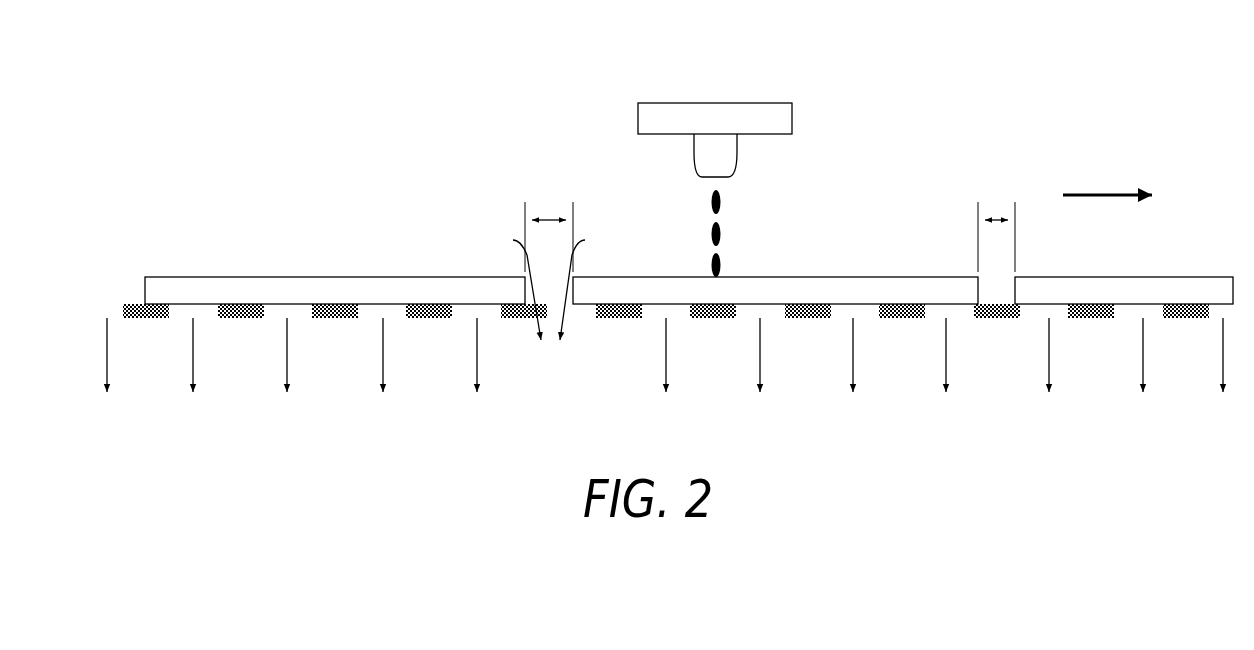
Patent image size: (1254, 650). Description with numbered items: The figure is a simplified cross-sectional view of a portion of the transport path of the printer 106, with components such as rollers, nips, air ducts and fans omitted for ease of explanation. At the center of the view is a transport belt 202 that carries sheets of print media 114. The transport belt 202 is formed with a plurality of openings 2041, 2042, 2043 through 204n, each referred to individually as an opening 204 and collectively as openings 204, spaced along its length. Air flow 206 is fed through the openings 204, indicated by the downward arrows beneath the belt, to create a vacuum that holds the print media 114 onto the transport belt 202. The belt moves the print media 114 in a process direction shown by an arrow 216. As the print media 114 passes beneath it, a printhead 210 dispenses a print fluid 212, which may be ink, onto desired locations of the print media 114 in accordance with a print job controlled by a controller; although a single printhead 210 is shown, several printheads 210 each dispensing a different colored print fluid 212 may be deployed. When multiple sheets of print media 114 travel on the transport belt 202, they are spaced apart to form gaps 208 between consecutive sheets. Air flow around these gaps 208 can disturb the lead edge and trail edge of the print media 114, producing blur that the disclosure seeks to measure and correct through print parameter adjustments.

The printer 106 is at (1010, 86).
The print media 114 is at (301, 276).
The transport belt 202 is at (133, 303).
The opening 204 is at (673, 355).
The first opening 2041 is at (180, 318).
The second opening 2042 is at (277, 318).
The third opening 2043 is at (367, 318).
The nth opening 204n is at (1213, 318).
The air flow 206 is at (109, 360).
The gap 208 is at (547, 217).
The printhead 210 is at (763, 103).
The print fluid 212 is at (724, 202).
The process direction arrow 216 is at (1103, 193).